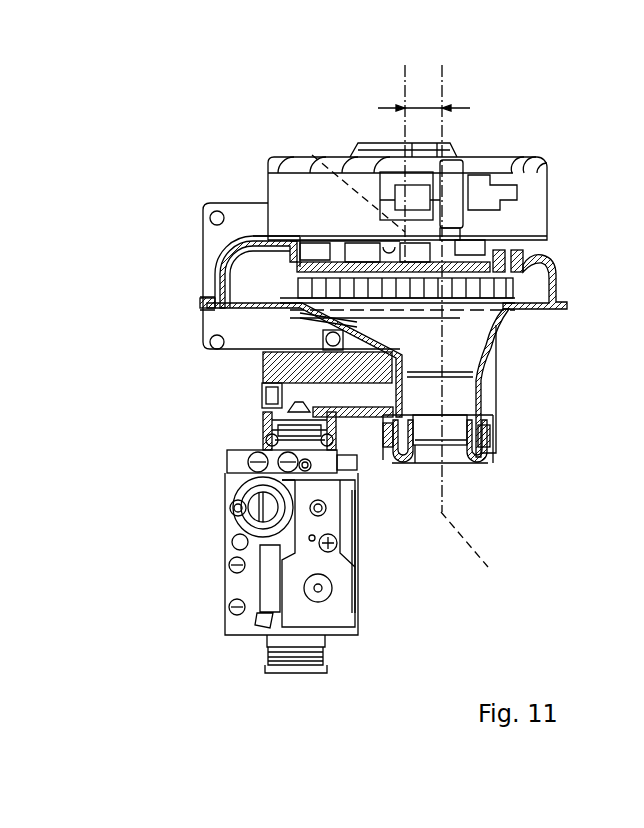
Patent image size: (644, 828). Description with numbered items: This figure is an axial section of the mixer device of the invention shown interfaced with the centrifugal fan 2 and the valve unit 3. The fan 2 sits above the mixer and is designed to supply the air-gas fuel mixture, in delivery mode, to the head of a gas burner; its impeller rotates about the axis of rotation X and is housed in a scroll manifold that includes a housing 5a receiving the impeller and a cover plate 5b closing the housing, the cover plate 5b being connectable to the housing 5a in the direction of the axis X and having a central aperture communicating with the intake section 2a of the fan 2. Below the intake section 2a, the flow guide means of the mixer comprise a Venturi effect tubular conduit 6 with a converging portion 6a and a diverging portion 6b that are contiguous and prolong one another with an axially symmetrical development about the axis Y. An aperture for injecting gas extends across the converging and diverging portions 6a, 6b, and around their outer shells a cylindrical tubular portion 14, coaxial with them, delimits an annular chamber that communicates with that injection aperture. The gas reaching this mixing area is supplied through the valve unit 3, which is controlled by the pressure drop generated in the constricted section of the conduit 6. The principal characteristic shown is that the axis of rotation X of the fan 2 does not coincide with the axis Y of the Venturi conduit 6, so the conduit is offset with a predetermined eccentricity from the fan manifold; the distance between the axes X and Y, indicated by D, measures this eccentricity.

The centrifugal fan 2 is at (565, 195).
The intake section 2a is at (450, 325).
The valve unit 3 is at (366, 596).
The housing 5a is at (220, 268).
The cover plate 5b is at (243, 338).
The Venturi effect tubular conduit 6 is at (453, 405).
The converging portion 6a is at (417, 463).
The diverging portion 6b is at (480, 397).
The cylindrical tubular portion 14 is at (498, 417).
The distance between the axes X and Y D is at (432, 108).
The axis of rotation of the fan X is at (312, 155).
The axis of the Venturi conduit Y is at (472, 551).